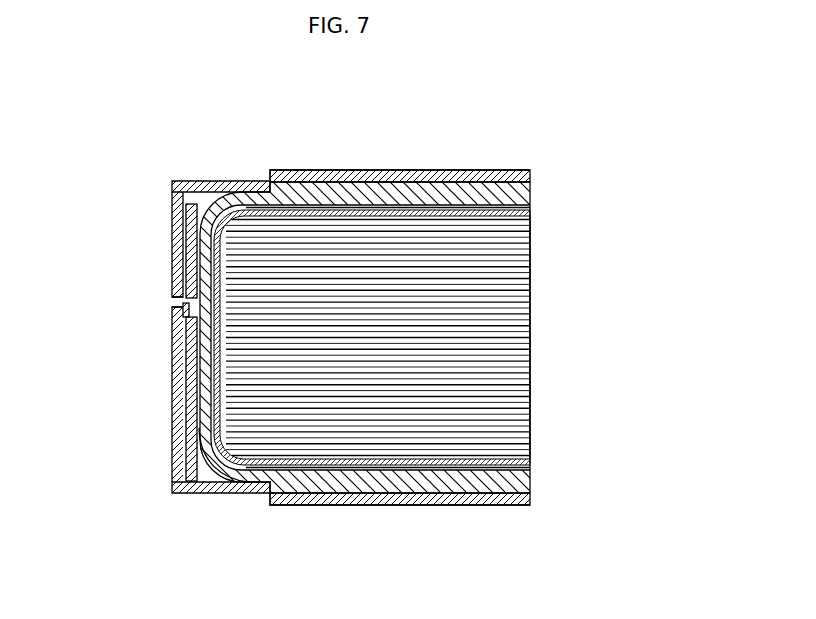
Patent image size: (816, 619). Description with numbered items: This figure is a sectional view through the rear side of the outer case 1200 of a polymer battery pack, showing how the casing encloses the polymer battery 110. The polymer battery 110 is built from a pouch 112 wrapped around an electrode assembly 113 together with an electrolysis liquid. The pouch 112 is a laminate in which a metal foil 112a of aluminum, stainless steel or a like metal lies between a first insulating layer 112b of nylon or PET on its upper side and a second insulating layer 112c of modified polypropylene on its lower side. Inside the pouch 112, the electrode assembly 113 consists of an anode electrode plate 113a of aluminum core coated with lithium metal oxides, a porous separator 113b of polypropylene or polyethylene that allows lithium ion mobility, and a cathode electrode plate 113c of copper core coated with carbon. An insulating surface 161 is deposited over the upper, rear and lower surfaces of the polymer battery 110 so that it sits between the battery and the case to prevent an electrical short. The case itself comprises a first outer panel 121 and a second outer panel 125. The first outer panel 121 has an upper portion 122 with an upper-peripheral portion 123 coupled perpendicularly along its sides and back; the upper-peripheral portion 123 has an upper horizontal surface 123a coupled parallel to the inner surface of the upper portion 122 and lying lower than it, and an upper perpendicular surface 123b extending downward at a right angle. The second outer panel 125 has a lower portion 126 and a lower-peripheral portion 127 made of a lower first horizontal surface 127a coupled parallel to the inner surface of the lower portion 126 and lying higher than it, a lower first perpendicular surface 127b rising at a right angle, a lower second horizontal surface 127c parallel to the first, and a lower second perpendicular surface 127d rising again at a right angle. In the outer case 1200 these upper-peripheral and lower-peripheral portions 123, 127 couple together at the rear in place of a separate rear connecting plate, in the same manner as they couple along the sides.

The outer case 1200 is at (384, 337).
The polymer battery 110 is at (409, 339).
The pouch 112 is at (372, 272).
The metal foil 112a is at (438, 212).
The first insulating layer 112b is at (383, 205).
The second insulating layer 112c is at (475, 218).
The electrode assembly 113 is at (378, 519).
The anode electrode plate 113a is at (475, 450).
The separator 113b is at (438, 443).
The cathode electrode plate 113c is at (381, 440).
The insulating surface 161 is at (327, 181).
The first outer panel 121 is at (525, 163).
The upper portion 122 is at (286, 170).
The second outer panel 125 is at (525, 516).
The lower portion 126 is at (287, 507).
The upper-peripheral portion 123 is at (122, 199).
The upper horizontal surface 123a is at (192, 180).
The upper perpendicular surface 123b is at (172, 208).
The lower-peripheral portion 127 is at (101, 393).
The lower first horizontal surface 127a is at (190, 497).
The lower first perpendicular surface 127b is at (172, 410).
The lower second horizontal surface 127c is at (178, 302).
The lower second perpendicular surface 127d is at (127, 295).